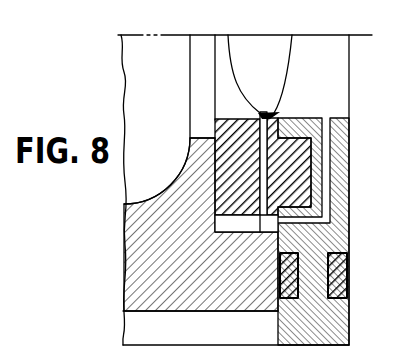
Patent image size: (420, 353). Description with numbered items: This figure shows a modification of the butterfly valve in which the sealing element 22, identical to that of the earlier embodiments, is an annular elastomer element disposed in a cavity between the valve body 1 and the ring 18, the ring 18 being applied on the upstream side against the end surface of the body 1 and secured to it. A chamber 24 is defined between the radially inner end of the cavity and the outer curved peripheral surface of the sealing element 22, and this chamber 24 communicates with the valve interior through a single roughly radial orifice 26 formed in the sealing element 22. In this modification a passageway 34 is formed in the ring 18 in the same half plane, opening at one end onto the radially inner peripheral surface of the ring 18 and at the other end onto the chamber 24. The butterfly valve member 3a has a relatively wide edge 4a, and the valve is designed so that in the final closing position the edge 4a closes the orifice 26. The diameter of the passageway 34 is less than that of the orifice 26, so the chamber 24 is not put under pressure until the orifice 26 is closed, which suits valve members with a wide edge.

The body 1 is at (143, 277).
The ring 18 is at (327, 240).
The sealing element 22 is at (220, 130).
The chamber 24 is at (237, 219).
The orifice 26 is at (261, 205).
The passageway 34 is at (328, 161).
The butterfly valve member 3a is at (268, 62).
The edge 4a is at (270, 118).